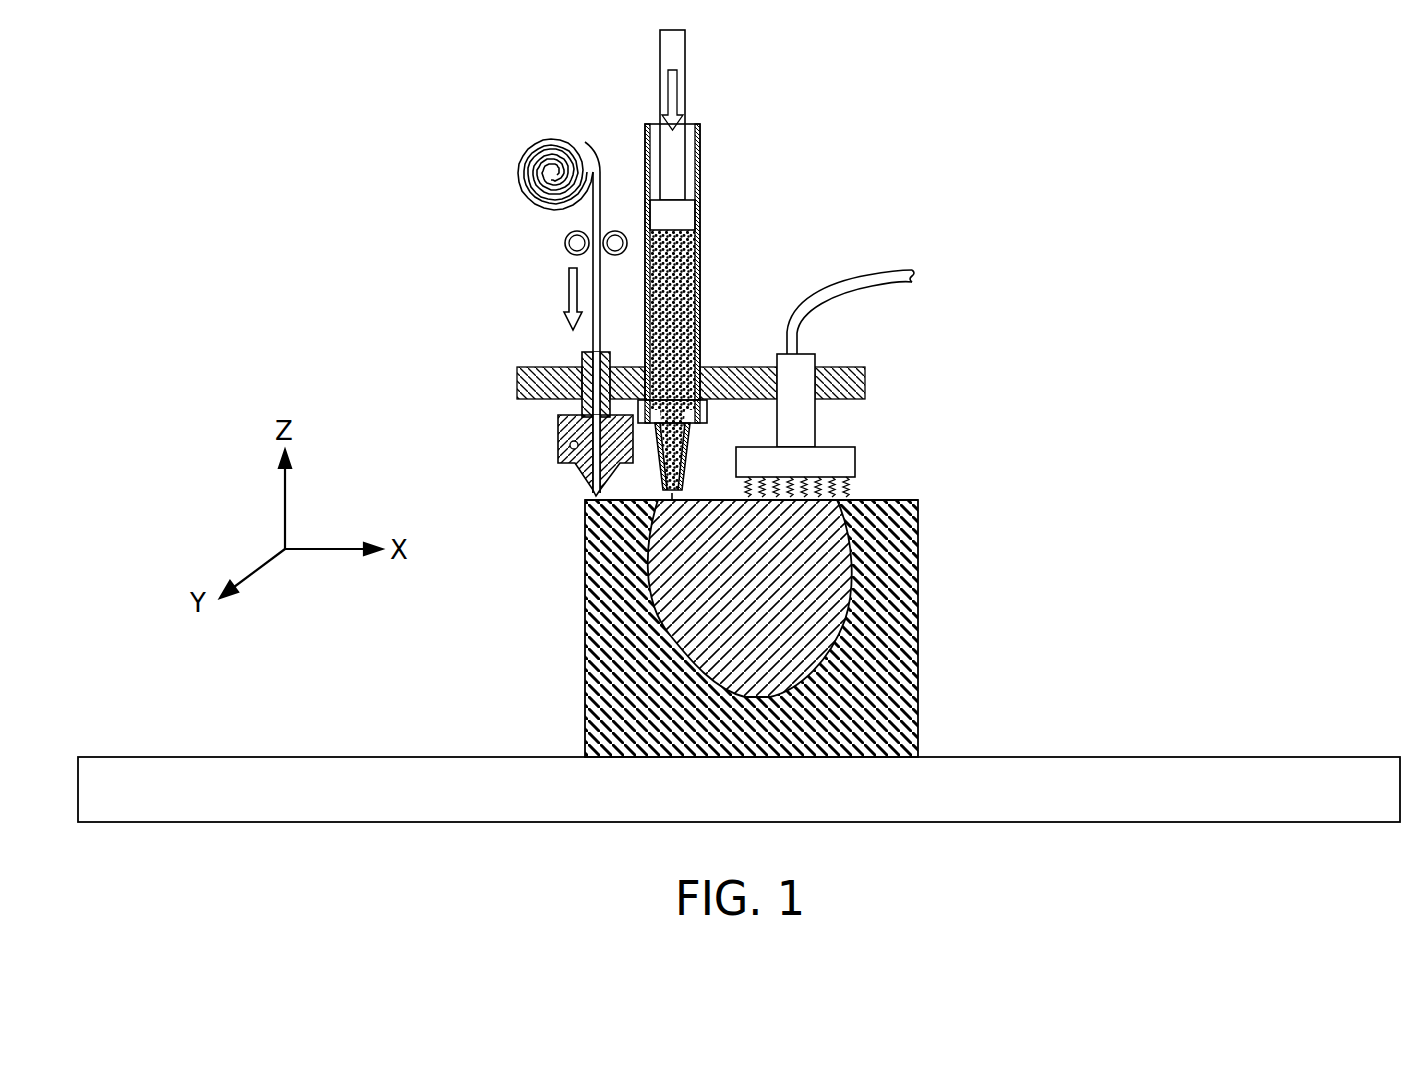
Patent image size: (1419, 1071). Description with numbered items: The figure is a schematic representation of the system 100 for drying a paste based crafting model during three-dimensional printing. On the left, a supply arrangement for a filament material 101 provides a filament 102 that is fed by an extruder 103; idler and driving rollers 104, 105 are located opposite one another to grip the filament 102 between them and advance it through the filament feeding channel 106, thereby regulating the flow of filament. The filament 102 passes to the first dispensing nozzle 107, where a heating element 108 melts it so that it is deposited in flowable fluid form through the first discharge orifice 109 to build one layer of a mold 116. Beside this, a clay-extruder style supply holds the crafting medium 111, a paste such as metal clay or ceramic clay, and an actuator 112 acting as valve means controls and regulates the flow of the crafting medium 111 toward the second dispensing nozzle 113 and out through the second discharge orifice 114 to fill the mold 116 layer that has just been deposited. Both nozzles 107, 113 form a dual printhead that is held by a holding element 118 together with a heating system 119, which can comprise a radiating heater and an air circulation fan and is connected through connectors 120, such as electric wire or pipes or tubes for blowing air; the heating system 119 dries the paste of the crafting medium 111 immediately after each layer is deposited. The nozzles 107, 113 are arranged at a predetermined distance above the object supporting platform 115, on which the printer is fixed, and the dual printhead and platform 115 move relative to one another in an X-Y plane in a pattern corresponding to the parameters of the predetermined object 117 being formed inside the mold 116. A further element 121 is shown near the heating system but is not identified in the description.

The system 100 is at (402, 165).
The filament material supply arrangement 101 is at (535, 140).
The filament 102 is at (562, 232).
The extruder 103 is at (503, 241).
The idler roller 104 is at (616, 231).
The driving roller 105 is at (562, 256).
The feeding channel 106 is at (582, 358).
The first dispensing nozzle 107 is at (562, 427).
The heating element 108 is at (574, 446).
The first discharge orifice 109 is at (592, 492).
The crafting medium 111 is at (681, 303).
The actuator 112 is at (684, 212).
The second dispensing nozzle 113 is at (700, 445).
The second discharge orifice 114 is at (672, 493).
The platform 115 is at (1248, 757).
The mold 116 is at (585, 668).
The predetermined object 117 is at (818, 578).
The holding element 118 is at (845, 386).
The heating system 119 is at (855, 460).
The connectors 120 is at (909, 272).
The flow direction 121 is at (883, 317).